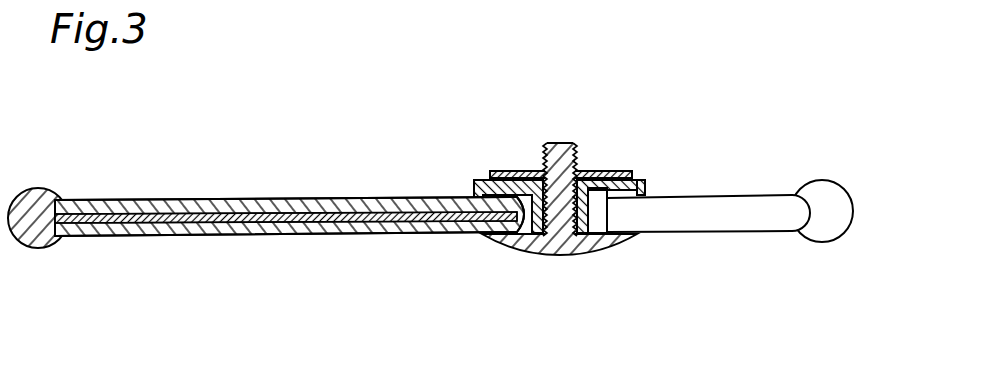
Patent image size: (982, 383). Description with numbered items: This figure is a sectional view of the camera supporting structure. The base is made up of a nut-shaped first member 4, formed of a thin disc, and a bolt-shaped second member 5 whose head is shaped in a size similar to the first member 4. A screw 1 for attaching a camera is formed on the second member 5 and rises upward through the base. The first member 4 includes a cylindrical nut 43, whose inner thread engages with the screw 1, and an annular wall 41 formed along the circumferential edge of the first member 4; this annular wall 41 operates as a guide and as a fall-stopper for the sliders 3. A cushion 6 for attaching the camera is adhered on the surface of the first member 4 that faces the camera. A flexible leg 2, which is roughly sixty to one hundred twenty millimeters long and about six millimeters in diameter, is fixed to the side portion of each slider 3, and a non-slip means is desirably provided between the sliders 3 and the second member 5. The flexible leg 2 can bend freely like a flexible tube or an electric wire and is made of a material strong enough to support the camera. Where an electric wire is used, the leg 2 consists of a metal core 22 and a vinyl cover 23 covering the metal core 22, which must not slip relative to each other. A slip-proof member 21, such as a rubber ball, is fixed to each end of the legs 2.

The screw 1 is at (552, 145).
The flexible leg 2 is at (210, 200).
The slip-proof member 21 is at (840, 243).
The metal core 22 is at (430, 222).
The vinyl cover 23 is at (323, 233).
The slider 3 is at (472, 179).
The first member 4 is at (645, 179).
The annular wall 41 is at (641, 181).
The cylindrical nut 43 is at (597, 236).
The second member 5 is at (542, 252).
The cushion 6 is at (597, 171).